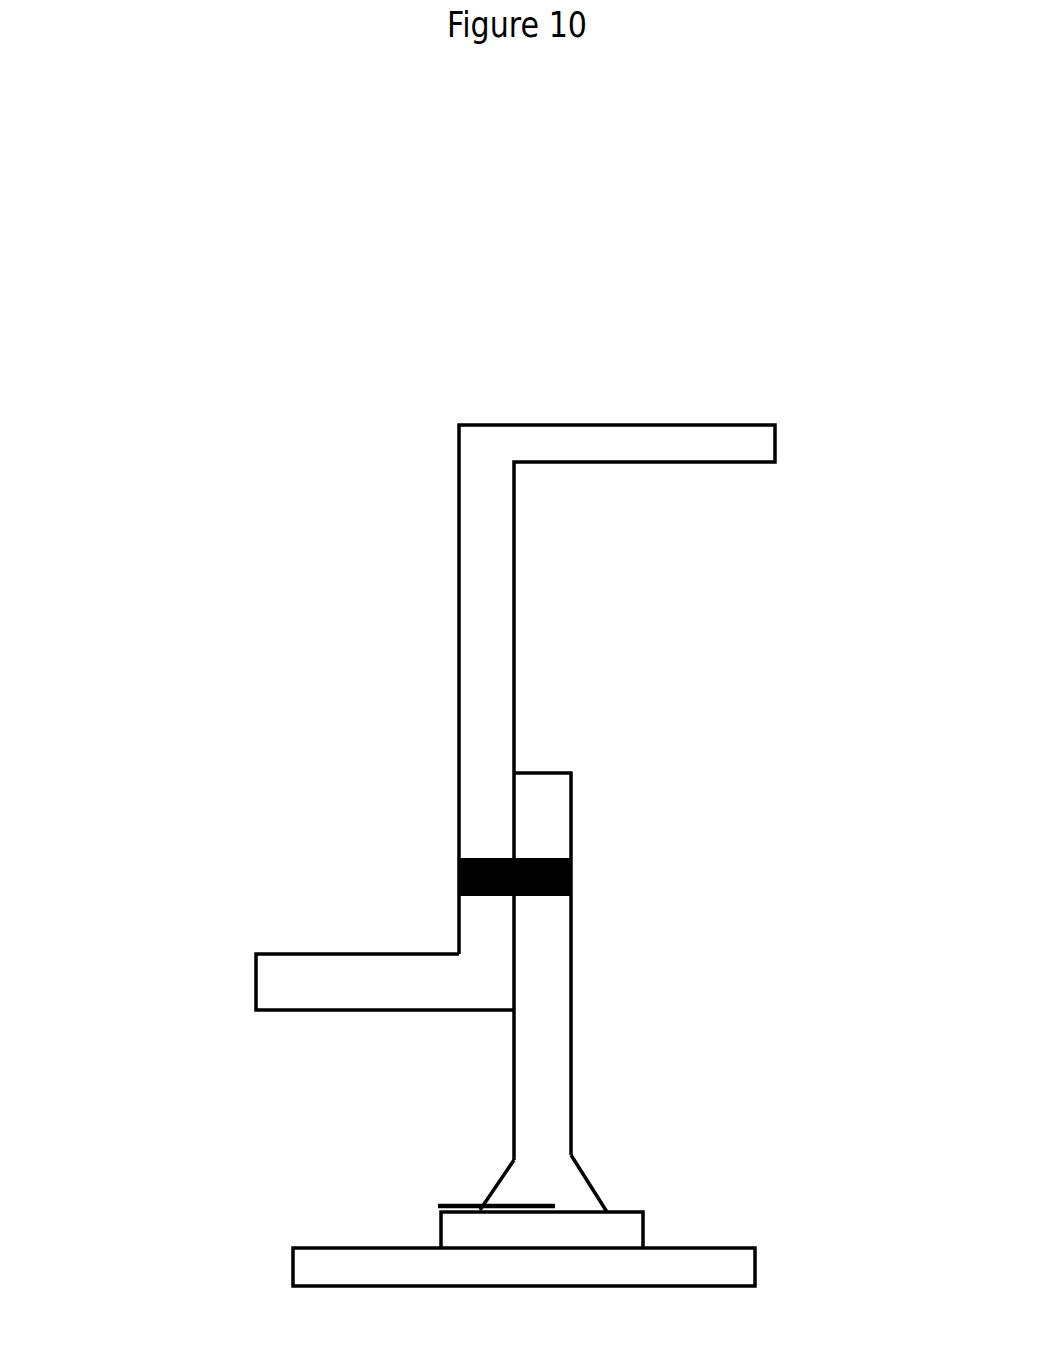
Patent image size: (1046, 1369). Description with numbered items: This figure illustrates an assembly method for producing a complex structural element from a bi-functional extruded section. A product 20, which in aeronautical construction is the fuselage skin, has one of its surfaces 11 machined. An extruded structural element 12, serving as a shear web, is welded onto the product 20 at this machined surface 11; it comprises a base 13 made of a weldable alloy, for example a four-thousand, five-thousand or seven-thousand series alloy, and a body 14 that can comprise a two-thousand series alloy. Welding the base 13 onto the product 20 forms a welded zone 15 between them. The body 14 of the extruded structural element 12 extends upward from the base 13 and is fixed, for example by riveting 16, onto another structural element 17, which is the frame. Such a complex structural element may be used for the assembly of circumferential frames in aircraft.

The structural element 17 is at (372, 628).
The body 14 is at (573, 983).
The riveting 16 is at (573, 870).
The extruded structural element 12 is at (426, 1047).
The base 13 is at (572, 1146).
The welded zone 15 is at (411, 1184).
The surface 11 is at (682, 1223).
The product 20 is at (204, 1258).